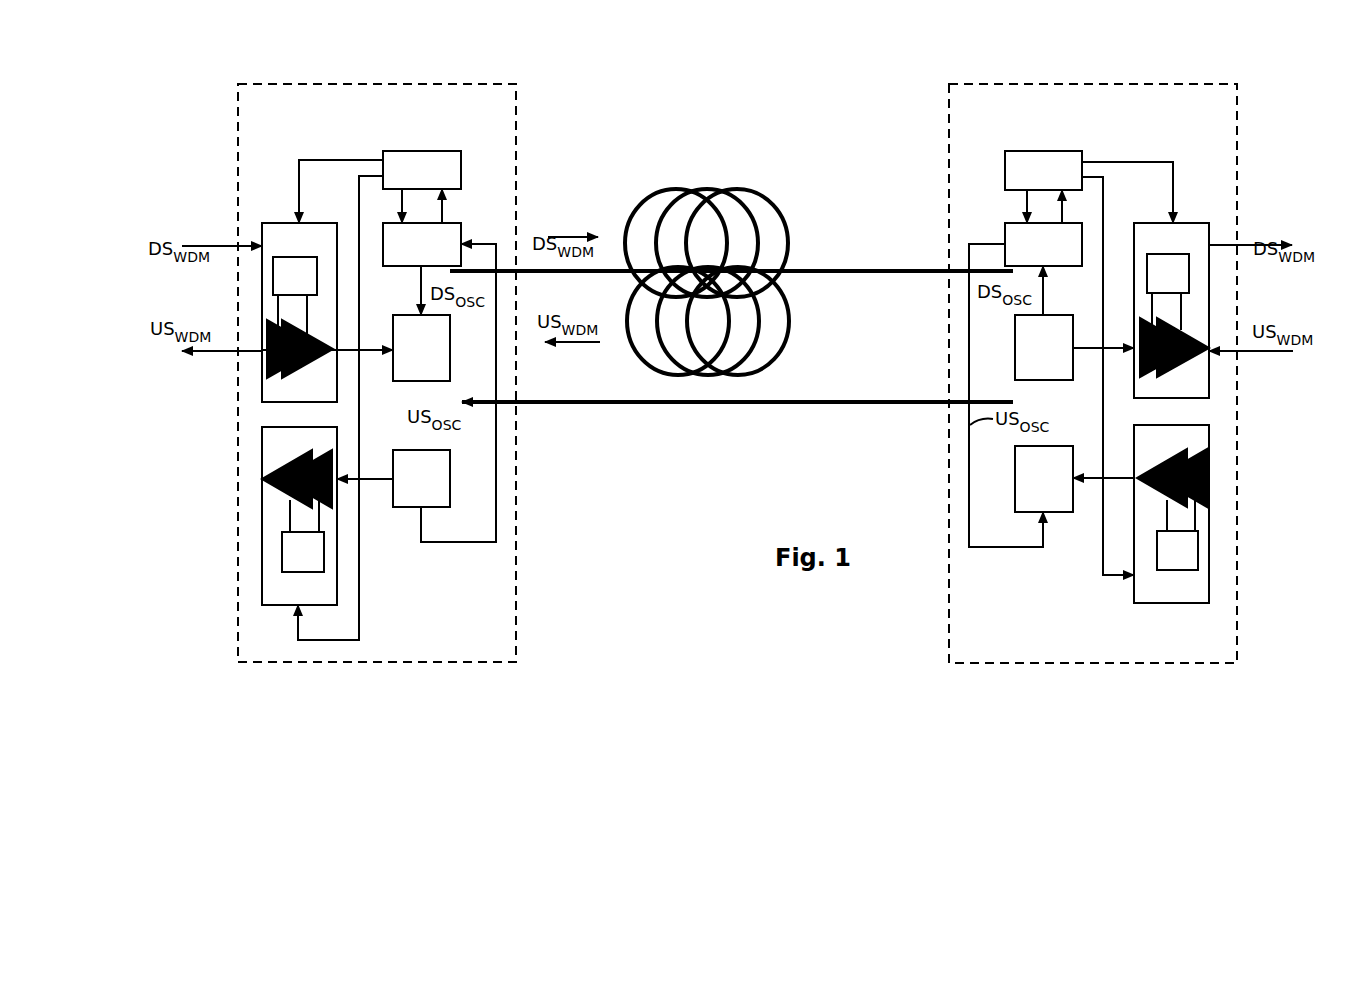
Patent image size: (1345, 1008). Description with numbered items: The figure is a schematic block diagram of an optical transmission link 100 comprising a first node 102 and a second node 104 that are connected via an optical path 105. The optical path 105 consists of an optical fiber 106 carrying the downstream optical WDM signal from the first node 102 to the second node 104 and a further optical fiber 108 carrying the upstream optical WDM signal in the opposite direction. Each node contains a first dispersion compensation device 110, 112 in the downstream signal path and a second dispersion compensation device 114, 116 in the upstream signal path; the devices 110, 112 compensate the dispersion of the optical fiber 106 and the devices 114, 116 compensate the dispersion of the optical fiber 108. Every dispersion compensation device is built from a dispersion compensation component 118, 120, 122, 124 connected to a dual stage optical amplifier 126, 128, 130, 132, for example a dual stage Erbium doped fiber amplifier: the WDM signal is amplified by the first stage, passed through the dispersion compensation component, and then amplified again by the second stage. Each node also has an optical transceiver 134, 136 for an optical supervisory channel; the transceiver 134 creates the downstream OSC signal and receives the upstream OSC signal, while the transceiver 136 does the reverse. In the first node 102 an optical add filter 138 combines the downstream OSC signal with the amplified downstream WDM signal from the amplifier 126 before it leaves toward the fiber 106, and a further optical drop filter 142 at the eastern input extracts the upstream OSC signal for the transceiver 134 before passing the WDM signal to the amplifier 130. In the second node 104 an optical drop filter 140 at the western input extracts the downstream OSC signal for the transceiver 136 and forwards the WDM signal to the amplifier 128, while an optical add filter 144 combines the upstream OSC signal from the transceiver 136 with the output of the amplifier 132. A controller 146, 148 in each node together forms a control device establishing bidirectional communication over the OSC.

The optical transmission link 100 is at (742, 103).
The first node 102 is at (413, 84).
The second node 104 is at (1083, 84).
The optical path 105 is at (716, 352).
The optical fiber 106 is at (846, 245).
The further optical fiber 108 is at (846, 352).
The first dispersion compensation device 110 is at (276, 235).
The first dispersion compensation device 112 is at (1153, 232).
The second dispersion compensation device 114 is at (278, 597).
The second dispersion compensation device 116 is at (1178, 595).
The dispersion compensation component 118 is at (277, 287).
The dispersion compensation component 120 is at (1149, 286).
The dispersion compensation component 122 is at (1159, 563).
The dispersion compensation component 124 is at (284, 564).
The dual stage optical amplifier 126 is at (315, 360).
The dual stage optical amplifier 128 is at (1188, 362).
The dual stage optical amplifier 130 is at (287, 466).
The dual stage optical amplifier 132 is at (1165, 462).
The optical transceiver 134 is at (403, 205).
The optical transceiver 136 is at (1025, 205).
The optical add filter 138 is at (446, 289).
The optical drop filter 140 is at (1018, 290).
The further optical drop filter 142 is at (402, 360).
The optical add filter 144 is at (1025, 360).
The controller 146 is at (403, 182).
The controller 148 is at (1024, 182).